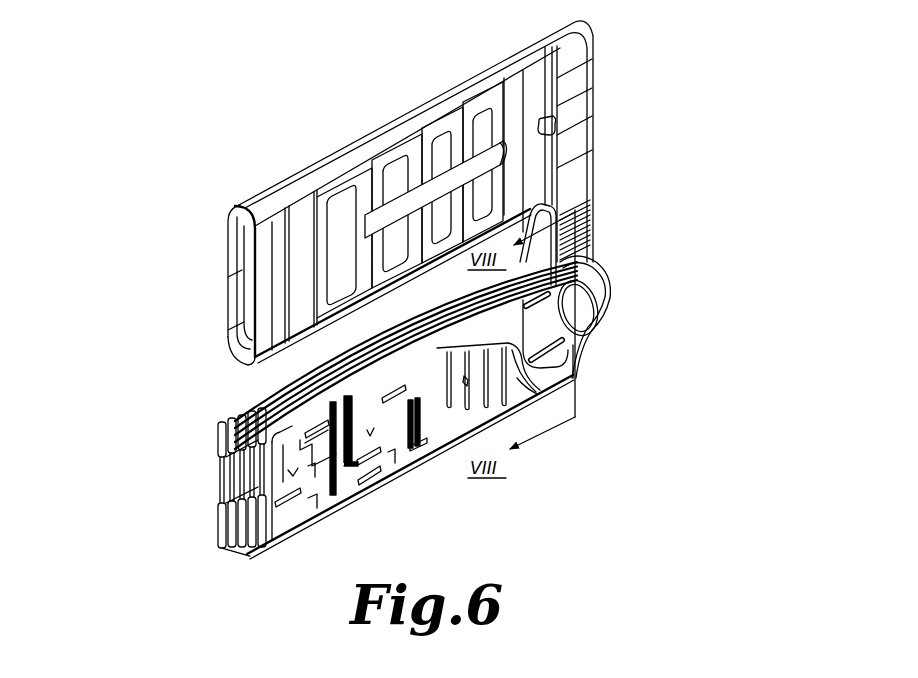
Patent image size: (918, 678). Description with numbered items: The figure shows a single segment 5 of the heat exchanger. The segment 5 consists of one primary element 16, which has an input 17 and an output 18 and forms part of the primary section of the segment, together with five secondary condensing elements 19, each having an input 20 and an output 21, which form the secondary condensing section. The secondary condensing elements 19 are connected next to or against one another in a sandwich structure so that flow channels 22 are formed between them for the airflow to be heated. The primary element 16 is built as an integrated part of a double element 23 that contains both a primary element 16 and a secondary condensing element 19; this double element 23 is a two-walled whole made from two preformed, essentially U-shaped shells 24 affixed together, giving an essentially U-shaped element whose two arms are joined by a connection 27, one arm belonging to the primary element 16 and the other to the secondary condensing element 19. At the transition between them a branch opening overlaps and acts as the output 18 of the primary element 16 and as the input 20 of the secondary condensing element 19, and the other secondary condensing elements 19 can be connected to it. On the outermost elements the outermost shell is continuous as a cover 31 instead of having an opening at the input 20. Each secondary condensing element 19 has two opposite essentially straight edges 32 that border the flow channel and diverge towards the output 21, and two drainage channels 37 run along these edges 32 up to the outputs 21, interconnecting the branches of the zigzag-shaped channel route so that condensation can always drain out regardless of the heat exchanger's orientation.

The segment 5 is at (650, 107).
The primary element 16 is at (586, 22).
The input 17 is at (228, 247).
The output 18 is at (646, 248).
The secondary condensing element 19 is at (290, 400).
The input 20 is at (636, 280).
The output 21 is at (228, 516).
The flow channel 22 is at (430, 350).
The double element 23 is at (446, 112).
The preformed shell 24 is at (264, 300).
The connection 27 is at (586, 176).
The cover 31 is at (588, 305).
The straight edge 32 is at (432, 350).
The drainage channel 37 is at (322, 392).